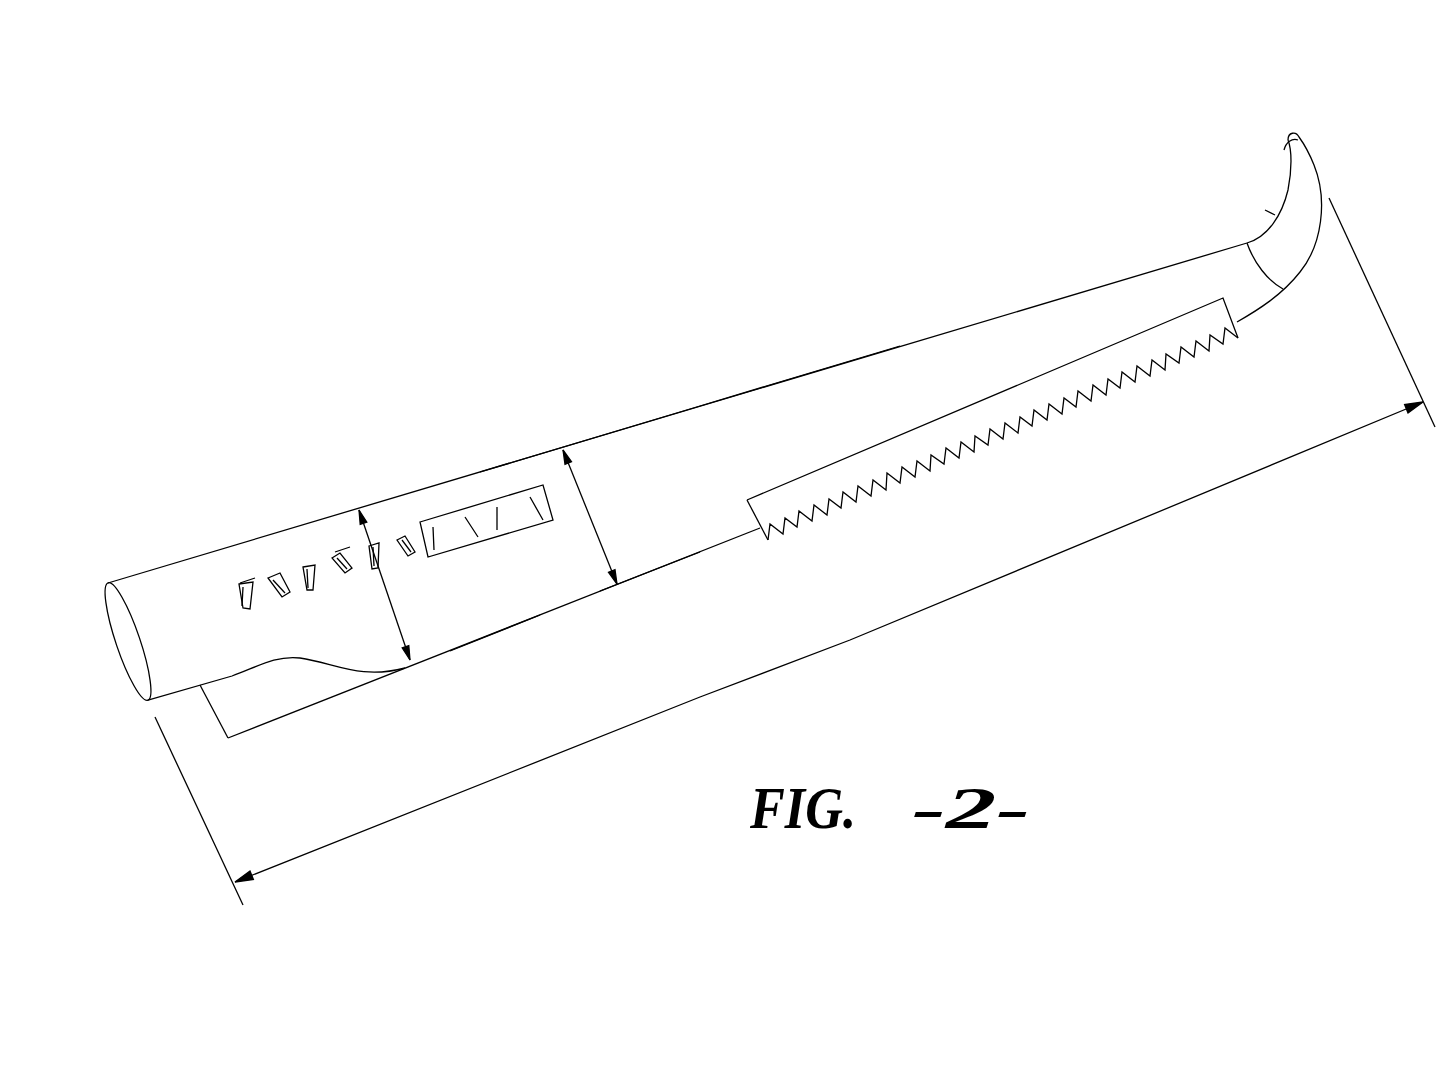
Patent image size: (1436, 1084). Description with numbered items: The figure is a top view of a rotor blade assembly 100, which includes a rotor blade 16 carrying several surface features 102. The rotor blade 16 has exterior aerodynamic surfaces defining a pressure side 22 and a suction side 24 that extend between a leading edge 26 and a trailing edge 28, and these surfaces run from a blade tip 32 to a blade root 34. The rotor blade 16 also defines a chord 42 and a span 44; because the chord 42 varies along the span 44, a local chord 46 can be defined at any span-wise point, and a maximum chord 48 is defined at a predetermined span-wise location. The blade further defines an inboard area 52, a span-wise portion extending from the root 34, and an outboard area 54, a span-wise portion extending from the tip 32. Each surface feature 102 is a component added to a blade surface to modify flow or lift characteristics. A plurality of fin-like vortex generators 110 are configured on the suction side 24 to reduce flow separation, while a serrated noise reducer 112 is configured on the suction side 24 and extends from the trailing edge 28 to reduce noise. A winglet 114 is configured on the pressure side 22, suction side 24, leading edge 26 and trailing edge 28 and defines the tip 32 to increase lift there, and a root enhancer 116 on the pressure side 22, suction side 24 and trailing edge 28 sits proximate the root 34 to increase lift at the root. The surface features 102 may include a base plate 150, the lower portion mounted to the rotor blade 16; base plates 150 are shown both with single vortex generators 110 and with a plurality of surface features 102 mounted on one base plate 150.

The rotor blade assembly 100 is at (677, 407).
The rotor blade 16 is at (522, 433).
The pressure side 22 is at (817, 398).
The suction side 24 is at (545, 590).
The leading edge 26 is at (732, 397).
The trailing edge 28 is at (667, 563).
The blade tip 32 is at (1291, 137).
The blade root 34 is at (130, 647).
The chord 42 is at (571, 473).
The local chord 46 is at (580, 493).
The span 44 is at (940, 603).
The maximum chord 48 is at (398, 618).
The inboard area 52 is at (522, 643).
The outboard area 54 is at (1030, 455).
The surface feature 102 is at (245, 577).
The vortex generator 110 is at (408, 530).
The noise reducer 112 is at (965, 428).
The winglet 114 is at (1303, 235).
The root enhancer 116 is at (248, 707).
The base plate 150 is at (485, 518).